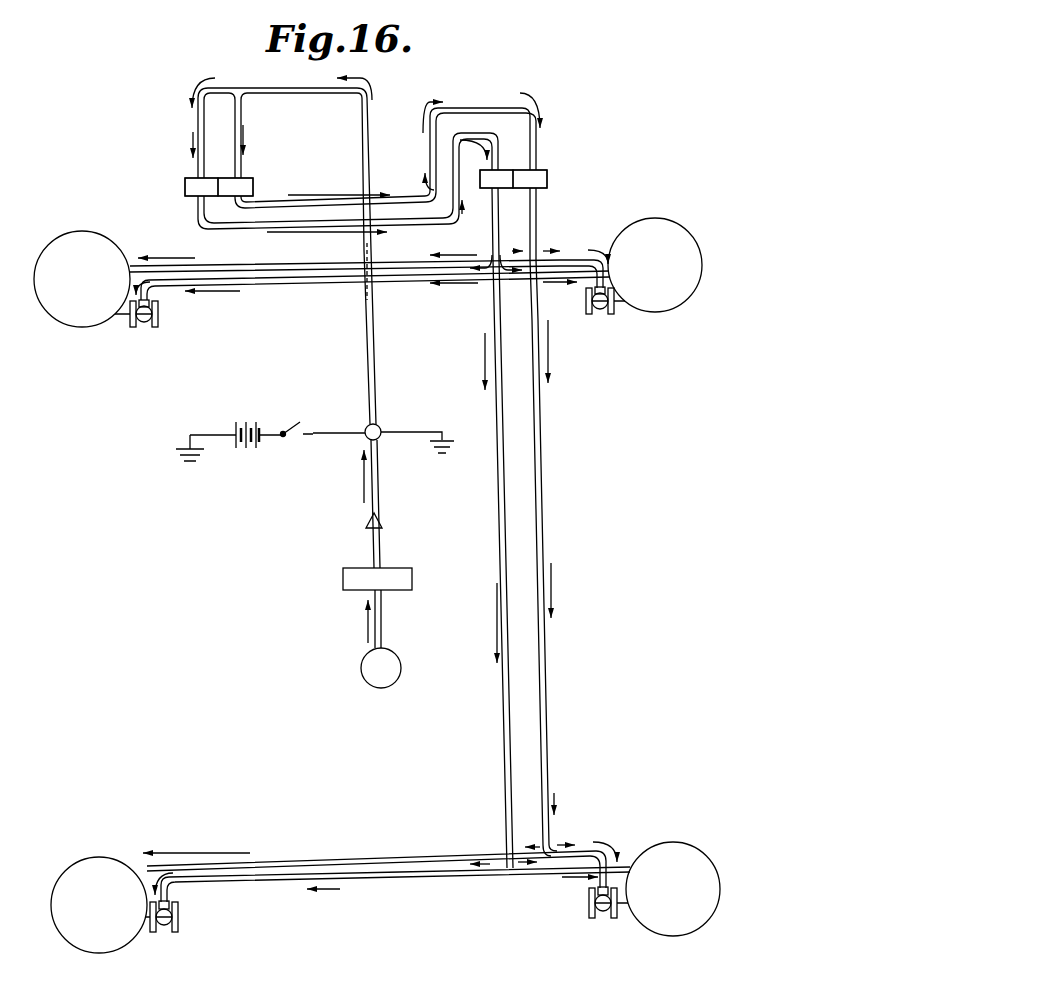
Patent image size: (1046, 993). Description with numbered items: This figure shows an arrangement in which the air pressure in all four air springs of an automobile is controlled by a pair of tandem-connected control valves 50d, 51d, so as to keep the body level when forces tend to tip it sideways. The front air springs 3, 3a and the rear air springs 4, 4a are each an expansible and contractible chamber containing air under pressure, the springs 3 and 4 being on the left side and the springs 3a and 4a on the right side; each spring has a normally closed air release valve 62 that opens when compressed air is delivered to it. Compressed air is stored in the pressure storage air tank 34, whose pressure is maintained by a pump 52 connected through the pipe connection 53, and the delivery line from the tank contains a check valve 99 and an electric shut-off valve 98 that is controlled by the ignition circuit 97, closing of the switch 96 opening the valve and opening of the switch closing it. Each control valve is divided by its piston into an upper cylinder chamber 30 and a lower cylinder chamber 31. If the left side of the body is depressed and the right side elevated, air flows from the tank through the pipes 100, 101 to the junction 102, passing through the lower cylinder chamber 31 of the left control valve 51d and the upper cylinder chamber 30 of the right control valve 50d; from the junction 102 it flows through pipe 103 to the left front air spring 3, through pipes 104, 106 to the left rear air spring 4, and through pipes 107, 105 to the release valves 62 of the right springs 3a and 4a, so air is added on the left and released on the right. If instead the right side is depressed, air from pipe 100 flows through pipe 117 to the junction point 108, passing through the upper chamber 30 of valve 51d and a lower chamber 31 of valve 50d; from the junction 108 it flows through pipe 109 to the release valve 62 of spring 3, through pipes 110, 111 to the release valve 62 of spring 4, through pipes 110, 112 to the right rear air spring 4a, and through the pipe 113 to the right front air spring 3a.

The left front air spring 3 is at (82, 279).
The right front air spring 3a is at (655, 265).
The left rear air spring 4 is at (99, 905).
The right rear air spring 4a is at (673, 889).
The upper cylinder chamber 30 is at (198, 198).
The lower cylinder chamber 31 is at (247, 178).
The pressure storage air tank 34 is at (413, 575).
The right control valve 50d is at (548, 180).
The left control valve 51d is at (185, 184).
The pump 52 is at (396, 667).
The pipe connection 53 is at (383, 619).
The air release valve 62 is at (149, 328).
The switch 96 is at (296, 426).
The ignition circuit 97 is at (263, 442).
The electric shut-off valve 98 is at (379, 427).
The check valve 99 is at (381, 519).
The pipe 100 is at (371, 132).
The pipe 101 is at (273, 203).
The junction 102 is at (542, 252).
The pipe 103 is at (251, 262).
The pipe 104 is at (543, 478).
The pipe 105 is at (612, 850).
The pipe 106 is at (318, 862).
The pipe 107 is at (574, 250).
The junction point 108 is at (493, 279).
The pipe 109 is at (322, 283).
The pipe 110 is at (500, 500).
The pipe 111 is at (280, 879).
The pipe 112 is at (549, 874).
The pipe 113 is at (607, 262).
The pipe 117 is at (262, 229).